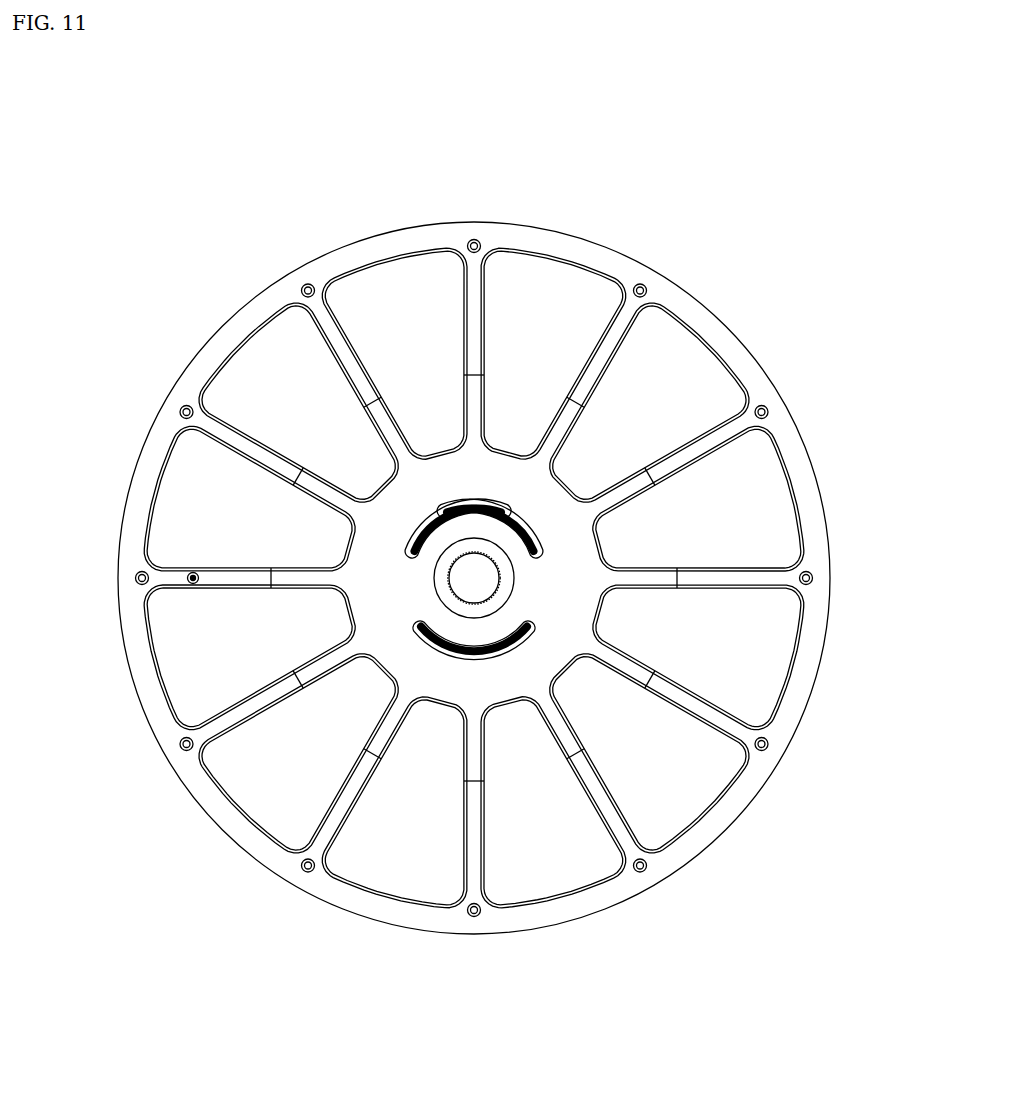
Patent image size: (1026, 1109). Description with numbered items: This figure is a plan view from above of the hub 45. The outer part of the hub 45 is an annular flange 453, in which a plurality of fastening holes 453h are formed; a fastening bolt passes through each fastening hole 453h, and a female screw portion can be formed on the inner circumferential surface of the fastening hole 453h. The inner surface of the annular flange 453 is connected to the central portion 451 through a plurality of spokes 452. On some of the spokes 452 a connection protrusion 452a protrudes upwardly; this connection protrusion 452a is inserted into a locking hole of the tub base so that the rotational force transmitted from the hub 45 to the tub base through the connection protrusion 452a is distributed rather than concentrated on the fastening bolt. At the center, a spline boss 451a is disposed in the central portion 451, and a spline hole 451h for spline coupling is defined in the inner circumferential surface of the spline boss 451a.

The hub 45 is at (574, 228).
The central portion 451 is at (553, 629).
The spline boss 451a is at (441, 594).
The spline hole 451h is at (481, 577).
The spoke 452 is at (700, 570).
The connection protrusion 452a is at (189, 583).
The annular flange 453 is at (693, 318).
The fastening hole 453h is at (474, 239).